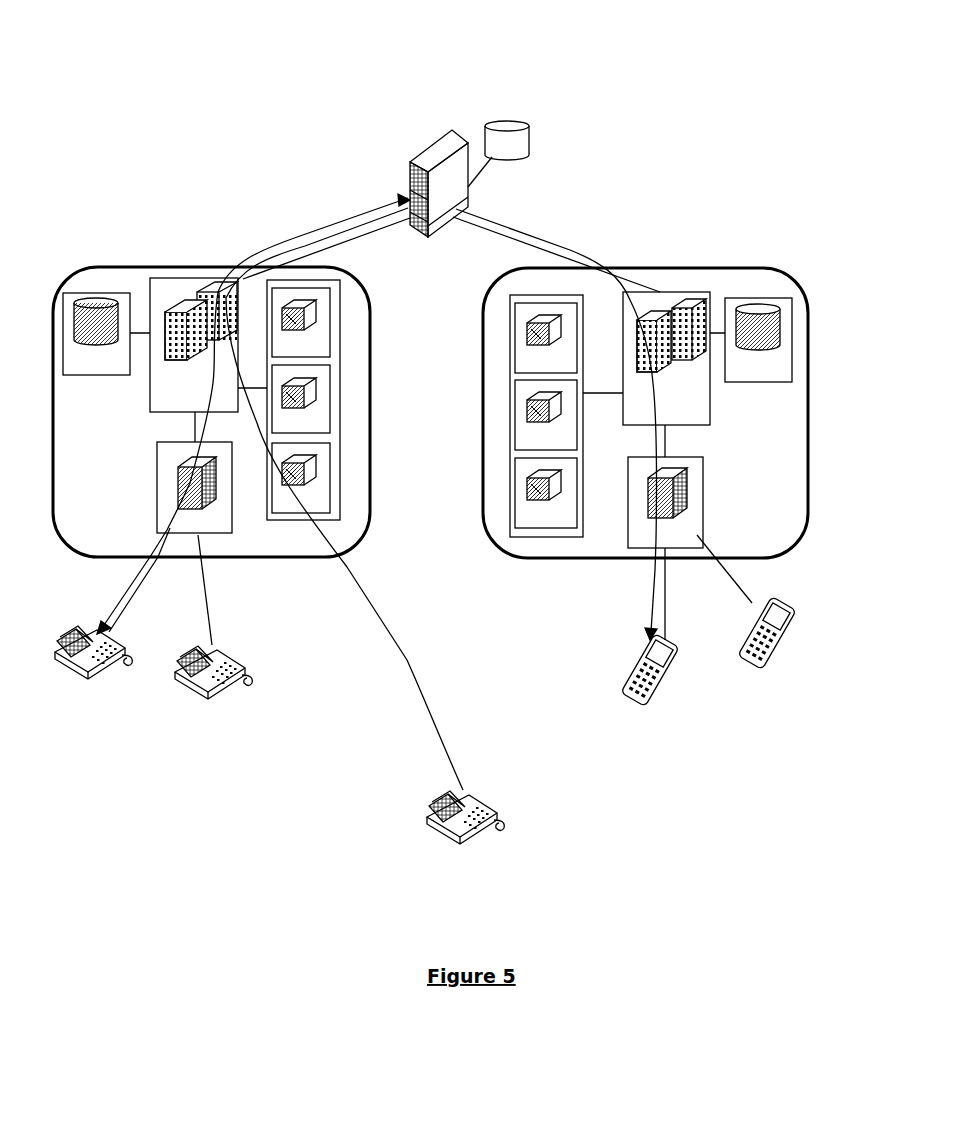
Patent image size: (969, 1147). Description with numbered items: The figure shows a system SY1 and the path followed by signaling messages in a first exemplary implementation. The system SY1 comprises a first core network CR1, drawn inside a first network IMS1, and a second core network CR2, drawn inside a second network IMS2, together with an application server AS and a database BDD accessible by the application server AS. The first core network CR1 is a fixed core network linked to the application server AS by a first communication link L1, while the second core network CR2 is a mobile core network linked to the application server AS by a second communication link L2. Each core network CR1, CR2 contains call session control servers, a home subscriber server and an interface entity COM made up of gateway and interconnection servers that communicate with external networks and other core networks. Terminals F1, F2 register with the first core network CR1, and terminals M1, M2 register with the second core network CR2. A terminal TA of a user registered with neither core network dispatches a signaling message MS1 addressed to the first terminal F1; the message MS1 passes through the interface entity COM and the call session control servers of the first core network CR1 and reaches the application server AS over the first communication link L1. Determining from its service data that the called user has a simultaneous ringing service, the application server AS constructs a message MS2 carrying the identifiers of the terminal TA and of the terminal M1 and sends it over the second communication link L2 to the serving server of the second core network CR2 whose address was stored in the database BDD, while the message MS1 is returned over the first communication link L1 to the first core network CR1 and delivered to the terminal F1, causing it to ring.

The system SY1 is at (217, 57).
The first network IMS1 is at (170, 182).
The second network IMS2 is at (695, 188).
The first core network CR1 is at (143, 268).
The second core network CR2 is at (752, 270).
The interface entity COM is at (270, 520).
The application server AS is at (407, 163).
The database BDD is at (530, 127).
The first communication link L1 is at (357, 240).
The second communication link L2 is at (547, 248).
The signaling message MS1 is at (135, 580).
The message MS2 is at (650, 617).
The first terminal F1 is at (97, 677).
The terminal F2 is at (220, 692).
The terminal TA is at (470, 795).
The terminal M1 is at (657, 692).
The terminal M2 is at (778, 642).